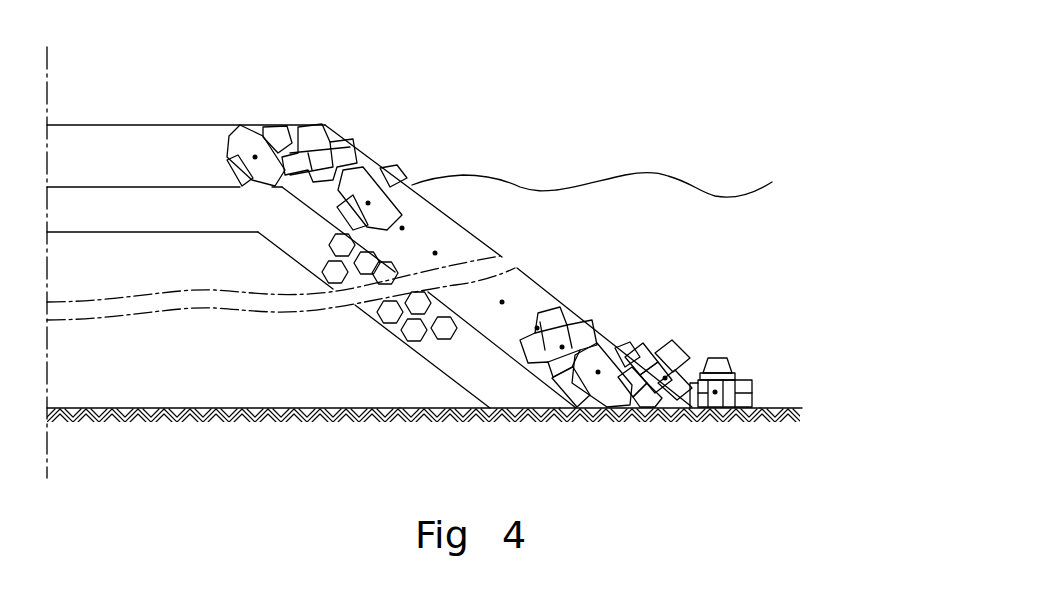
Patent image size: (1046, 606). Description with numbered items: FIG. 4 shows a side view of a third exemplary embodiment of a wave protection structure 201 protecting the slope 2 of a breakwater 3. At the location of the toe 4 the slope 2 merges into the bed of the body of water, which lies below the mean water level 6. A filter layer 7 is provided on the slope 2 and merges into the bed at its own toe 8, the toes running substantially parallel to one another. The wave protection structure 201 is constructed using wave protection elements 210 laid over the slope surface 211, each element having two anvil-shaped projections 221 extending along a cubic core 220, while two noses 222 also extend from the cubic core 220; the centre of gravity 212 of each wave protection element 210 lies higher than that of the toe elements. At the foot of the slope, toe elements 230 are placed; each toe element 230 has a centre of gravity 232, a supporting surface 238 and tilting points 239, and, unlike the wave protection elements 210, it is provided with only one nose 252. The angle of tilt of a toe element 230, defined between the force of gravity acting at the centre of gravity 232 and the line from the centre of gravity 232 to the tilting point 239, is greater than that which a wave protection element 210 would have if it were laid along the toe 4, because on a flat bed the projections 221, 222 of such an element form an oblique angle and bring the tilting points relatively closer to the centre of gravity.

The slope 2 is at (474, 388).
The breakwater 3 is at (258, 432).
The toe 4 is at (468, 430).
The mean water level 6 is at (658, 171).
The filter layer 7 is at (397, 262).
The toe 8 is at (600, 430).
The wave protection structure 201 is at (509, 129).
The wave protection element 210 is at (355, 135).
The slope surface 211 is at (436, 205).
The centre of gravity 212 is at (255, 157).
The cubic core 220 is at (362, 193).
The anvil-shaped projection 221 is at (348, 134).
The nose 222 is at (288, 114).
The toe element 230 is at (715, 338).
The centre of gravity 232 is at (758, 402).
The supporting surface 238 is at (712, 425).
The tilting point 239 is at (762, 400).
The nose 252 is at (733, 358).